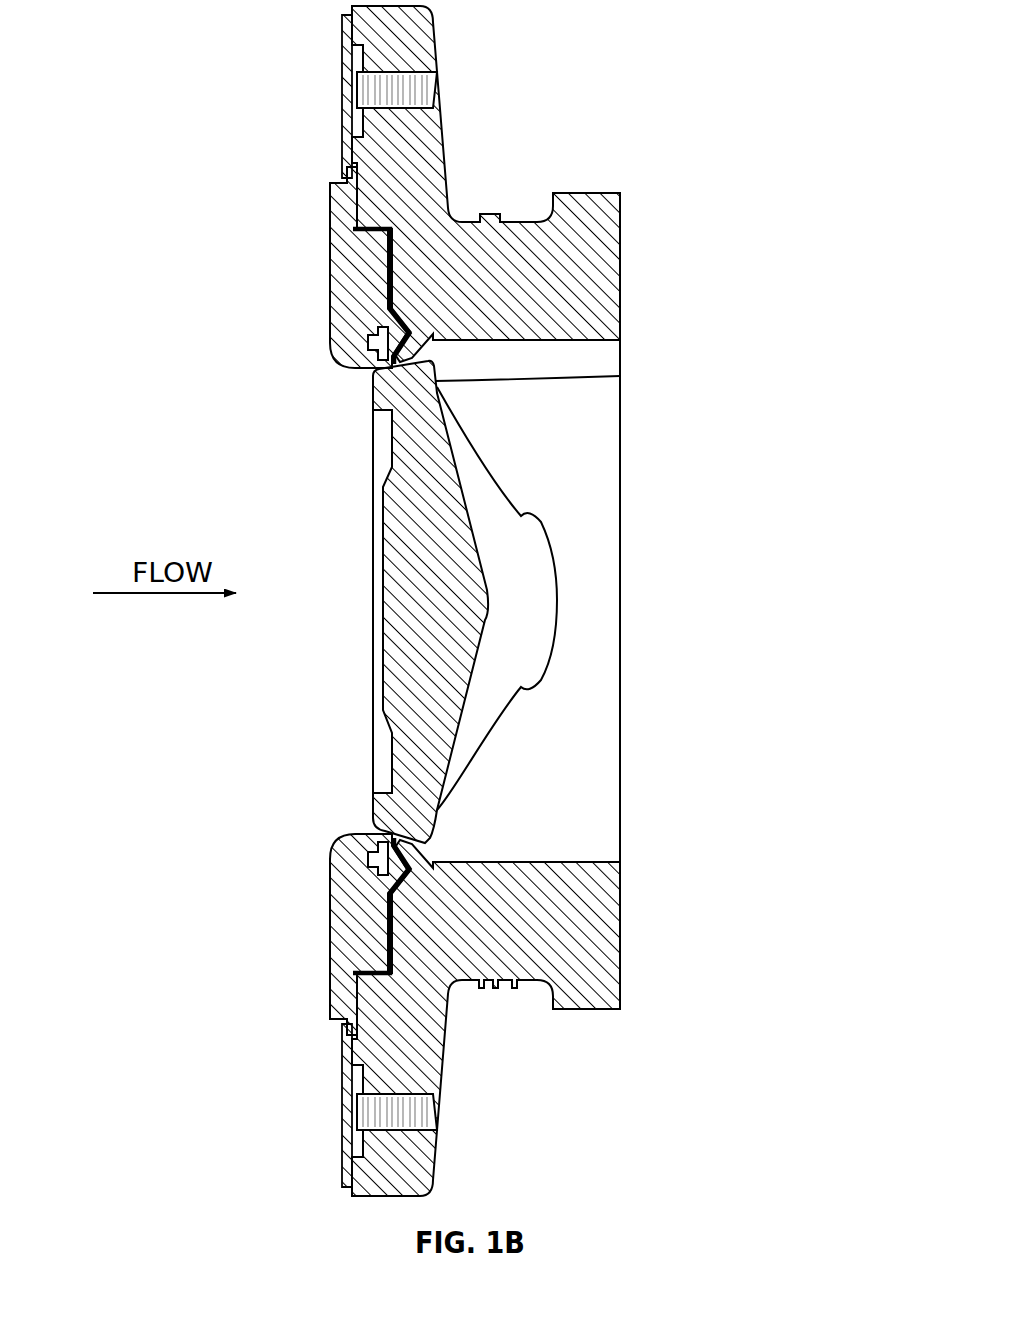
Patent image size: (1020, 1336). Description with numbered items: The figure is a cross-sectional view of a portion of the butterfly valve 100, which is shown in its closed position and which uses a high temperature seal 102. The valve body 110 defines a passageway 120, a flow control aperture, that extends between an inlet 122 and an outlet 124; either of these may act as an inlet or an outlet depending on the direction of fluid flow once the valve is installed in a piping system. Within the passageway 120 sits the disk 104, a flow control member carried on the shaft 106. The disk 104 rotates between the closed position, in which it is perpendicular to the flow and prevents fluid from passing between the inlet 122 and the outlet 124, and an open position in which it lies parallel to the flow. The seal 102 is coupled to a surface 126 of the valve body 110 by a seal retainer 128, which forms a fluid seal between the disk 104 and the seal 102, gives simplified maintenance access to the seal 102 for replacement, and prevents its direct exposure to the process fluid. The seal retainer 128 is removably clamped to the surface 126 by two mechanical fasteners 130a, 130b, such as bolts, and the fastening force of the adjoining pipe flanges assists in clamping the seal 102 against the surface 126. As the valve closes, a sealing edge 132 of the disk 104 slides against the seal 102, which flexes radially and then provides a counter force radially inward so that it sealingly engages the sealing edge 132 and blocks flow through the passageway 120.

The butterfly valve 100 is at (479, 601).
The high temperature seal 102 is at (368, 336).
The disk 104 is at (360, 602).
The shaft 106 is at (533, 527).
The valve body 110 is at (587, 270).
The passageway 120 is at (563, 432).
The inlet 122 is at (372, 617).
The outlet 124 is at (620, 608).
The surface 126 is at (355, 246).
The seal retainer 128 is at (355, 302).
The mechanical fastener 130a is at (348, 83).
The mechanical fastener 130b is at (348, 1117).
The sealing edge 132 is at (620, 377).